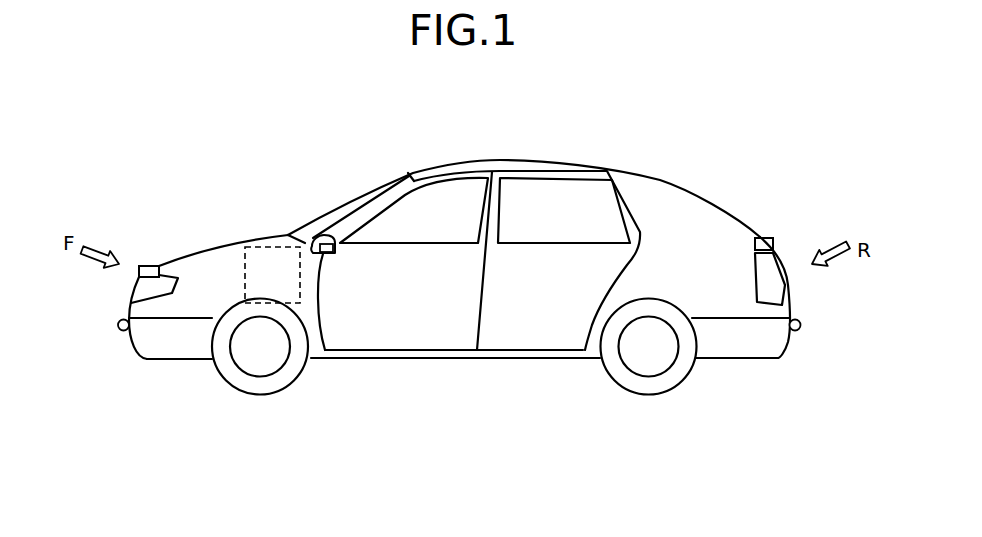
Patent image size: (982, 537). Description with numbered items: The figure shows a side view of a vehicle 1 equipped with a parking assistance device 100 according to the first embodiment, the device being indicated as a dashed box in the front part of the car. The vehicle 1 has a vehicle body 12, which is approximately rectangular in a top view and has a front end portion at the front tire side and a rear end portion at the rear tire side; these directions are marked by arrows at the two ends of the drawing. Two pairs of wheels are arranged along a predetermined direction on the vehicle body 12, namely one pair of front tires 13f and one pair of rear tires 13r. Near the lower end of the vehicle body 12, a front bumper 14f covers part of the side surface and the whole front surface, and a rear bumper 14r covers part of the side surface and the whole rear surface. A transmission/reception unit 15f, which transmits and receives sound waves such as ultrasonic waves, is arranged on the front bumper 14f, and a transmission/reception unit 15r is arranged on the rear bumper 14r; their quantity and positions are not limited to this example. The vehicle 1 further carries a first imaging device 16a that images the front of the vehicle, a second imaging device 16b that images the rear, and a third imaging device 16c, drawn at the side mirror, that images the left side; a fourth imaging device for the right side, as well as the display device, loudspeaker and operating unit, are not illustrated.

The vehicle 1 is at (388, 146).
The vehicle body 12 is at (662, 202).
The front tires 13f is at (263, 360).
The rear tires 13r is at (655, 378).
The front bumper 14f is at (140, 353).
The rear bumper 14r is at (787, 353).
The transmission/reception unit 15f is at (118, 325).
The transmission/reception unit 15r is at (801, 327).
The first imaging device 16a is at (155, 266).
The second imaging device 16b is at (767, 238).
The third imaging device 16c is at (324, 243).
The parking assistance device 100 is at (270, 247).